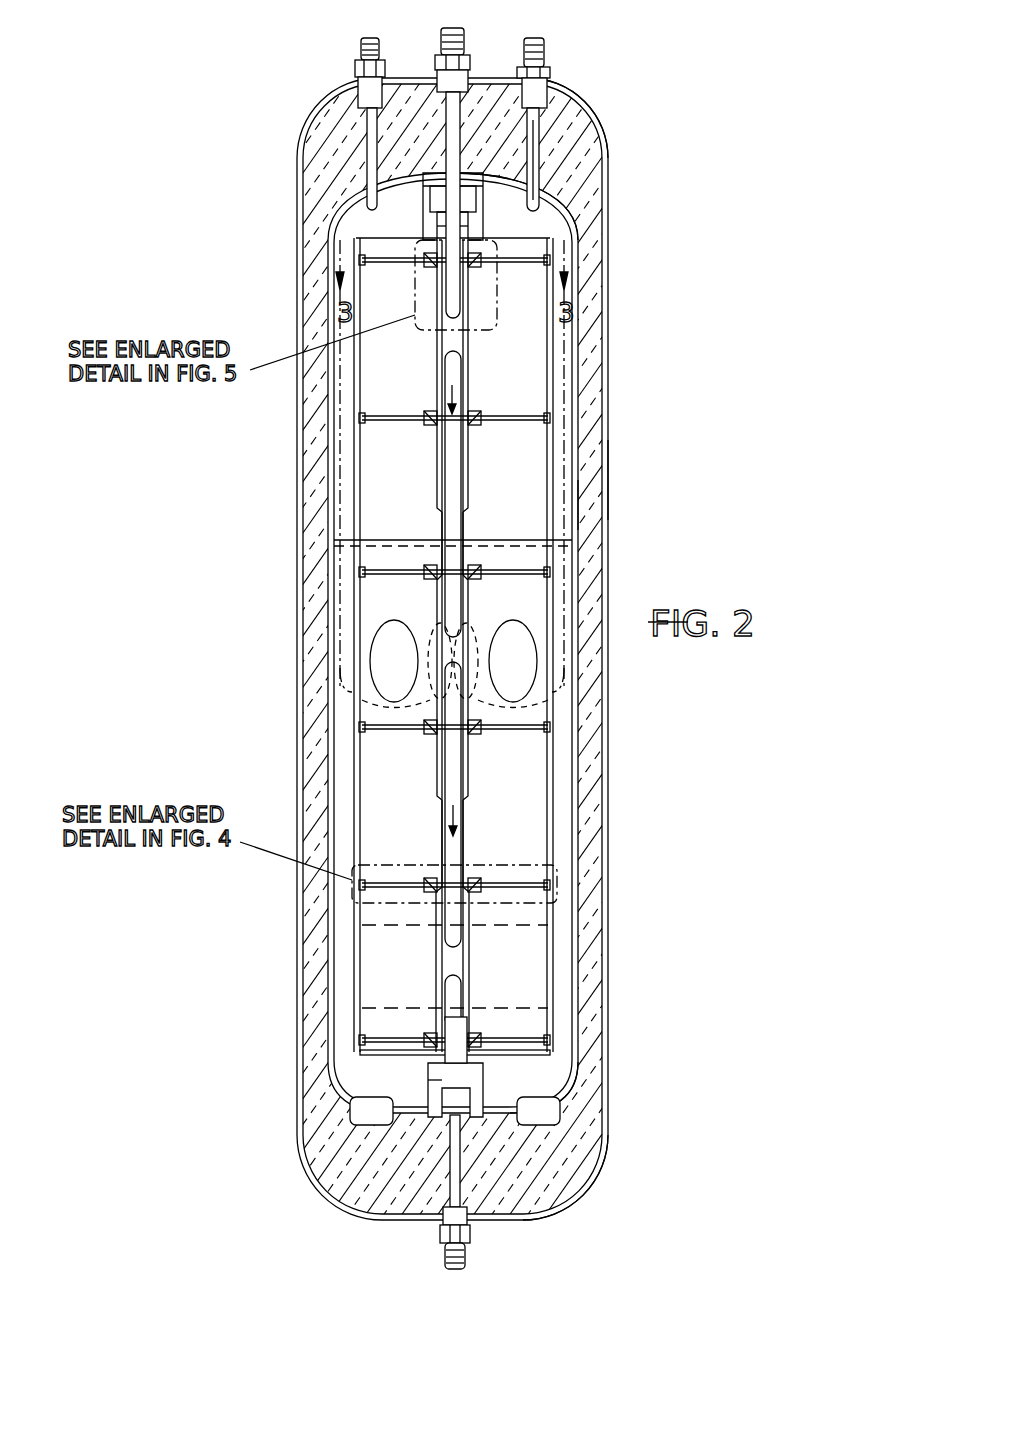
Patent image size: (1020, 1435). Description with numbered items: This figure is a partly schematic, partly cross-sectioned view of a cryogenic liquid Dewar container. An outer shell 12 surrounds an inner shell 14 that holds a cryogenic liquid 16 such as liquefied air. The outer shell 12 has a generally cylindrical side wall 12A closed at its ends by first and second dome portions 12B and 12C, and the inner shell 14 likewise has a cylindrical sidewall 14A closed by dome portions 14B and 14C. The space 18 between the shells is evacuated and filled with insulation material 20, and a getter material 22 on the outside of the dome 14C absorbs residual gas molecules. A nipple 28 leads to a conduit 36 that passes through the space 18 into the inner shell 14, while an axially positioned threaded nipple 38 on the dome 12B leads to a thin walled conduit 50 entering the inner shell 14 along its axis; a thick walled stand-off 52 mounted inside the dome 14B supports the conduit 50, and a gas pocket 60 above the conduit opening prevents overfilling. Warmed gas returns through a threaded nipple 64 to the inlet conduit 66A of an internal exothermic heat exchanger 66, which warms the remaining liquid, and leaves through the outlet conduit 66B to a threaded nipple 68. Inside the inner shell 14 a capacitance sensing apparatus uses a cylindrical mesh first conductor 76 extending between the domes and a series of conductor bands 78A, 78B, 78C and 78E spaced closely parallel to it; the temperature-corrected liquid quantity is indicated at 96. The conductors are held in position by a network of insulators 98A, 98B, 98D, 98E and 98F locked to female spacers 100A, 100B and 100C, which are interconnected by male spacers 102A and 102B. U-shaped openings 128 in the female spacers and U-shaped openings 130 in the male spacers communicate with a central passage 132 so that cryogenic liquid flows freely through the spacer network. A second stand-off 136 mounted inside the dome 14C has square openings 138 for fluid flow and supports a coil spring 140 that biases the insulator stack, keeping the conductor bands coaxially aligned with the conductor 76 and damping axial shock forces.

The outer shell 12 is at (607, 395).
The side wall 12A is at (607, 480).
The first dome portion 12B is at (577, 107).
The second dome portion 12C is at (593, 1187).
The inner shell 14 is at (585, 462).
The sidewall 14A is at (582, 500).
The first dome portion 14B is at (520, 170).
The second dome portion 14C is at (543, 1200).
The cryogenic liquid 16 is at (575, 745).
The space 18 is at (590, 540).
The insulation material 20 is at (590, 585).
The getter material 22 is at (560, 1120).
The nipple 28 is at (472, 1235).
The conduit 36 is at (440, 1178).
The threaded nipple 38 is at (467, 57).
The conduit 50 is at (505, 200).
The stand-off 52 is at (420, 205).
The gas pocket 60 is at (512, 228).
The threaded nipple 64 is at (550, 73).
The exothermic heat exchanger 66 is at (605, 680).
The inlet conduit 66A is at (540, 180).
The outlet conduit 66B is at (302, 130).
The threaded nipple 68 is at (352, 75).
The first conductor 76 is at (360, 460).
The conductor band 78A is at (367, 397).
The conductor band 78B is at (375, 478).
The conductor band 78C is at (370, 600).
The conductor band 78E is at (370, 942).
The corrected liquid quantity 96 is at (370, 530).
The insulator 98A is at (522, 285).
The insulator 98B is at (550, 418).
The insulator 98D is at (365, 710).
The insulator 98E is at (550, 885).
The insulator 98F is at (550, 1040).
The female spacer 100A is at (470, 400).
The female spacer 100B is at (600, 640).
The female spacer 100C is at (470, 968).
The male spacer 102A is at (405, 528).
The male spacer 102B is at (560, 800).
The U-shaped openings 128 is at (468, 446).
The U-shaped openings 130 is at (470, 745).
The central passage 132 is at (455, 800).
The second stand-off 136 is at (410, 1080).
The openings 138 is at (445, 1097).
The coil spring 140 is at (545, 1057).